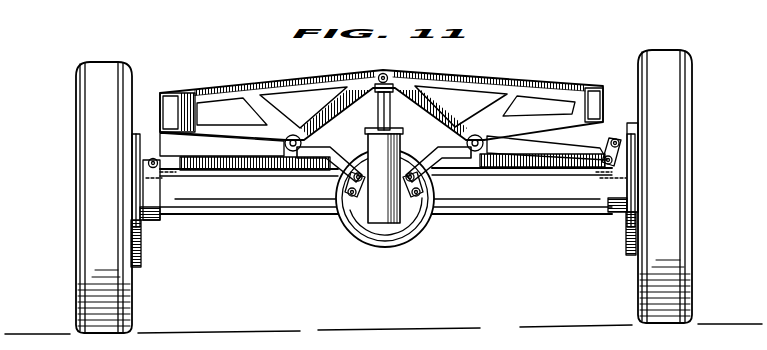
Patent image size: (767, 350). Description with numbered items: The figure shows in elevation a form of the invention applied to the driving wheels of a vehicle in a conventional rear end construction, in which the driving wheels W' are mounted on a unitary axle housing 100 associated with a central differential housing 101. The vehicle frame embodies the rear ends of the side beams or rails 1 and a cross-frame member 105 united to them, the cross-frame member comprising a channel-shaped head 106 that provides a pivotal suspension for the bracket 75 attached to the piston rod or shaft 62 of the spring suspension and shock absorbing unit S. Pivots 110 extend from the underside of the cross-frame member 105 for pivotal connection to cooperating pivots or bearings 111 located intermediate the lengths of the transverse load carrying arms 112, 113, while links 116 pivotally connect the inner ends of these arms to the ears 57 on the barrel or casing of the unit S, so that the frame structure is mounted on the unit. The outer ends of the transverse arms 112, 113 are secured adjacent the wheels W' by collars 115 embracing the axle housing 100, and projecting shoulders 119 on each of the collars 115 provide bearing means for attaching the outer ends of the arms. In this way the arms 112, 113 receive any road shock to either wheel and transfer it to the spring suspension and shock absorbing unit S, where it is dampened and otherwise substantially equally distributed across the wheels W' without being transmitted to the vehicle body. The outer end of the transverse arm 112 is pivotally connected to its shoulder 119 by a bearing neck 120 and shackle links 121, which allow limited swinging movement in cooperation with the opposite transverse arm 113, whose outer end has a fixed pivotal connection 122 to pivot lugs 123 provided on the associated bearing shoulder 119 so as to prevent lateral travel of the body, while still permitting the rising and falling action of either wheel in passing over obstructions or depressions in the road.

The side beams or rails 1 is at (172, 100).
The ears 57 is at (384, 166).
The piston rod or shaft 62 is at (379, 115).
The bracket 75 is at (480, 90).
The axle housing 100 is at (250, 205).
The differential housing 101 is at (370, 238).
The cross-frame member 105 is at (500, 80).
The channel-shaped head 106 is at (393, 77).
The pivots 110 is at (302, 126).
The pivots or bearings 111 is at (283, 155).
The transverse load carrying arm 112 is at (547, 154).
The transverse load carrying arm 113 is at (229, 158).
The collars 115 is at (150, 226).
The links 116 is at (336, 212).
The projecting shoulders 119 is at (183, 211).
The bearing neck 120 is at (634, 128).
The shackle links 121 is at (609, 148).
The fixed pivotal connection 122 is at (163, 162).
The pivot lugs 123 is at (149, 159).
The spring suspension and shock absorbing unit S is at (393, 217).
The driving wheels w' is at (370, 191).